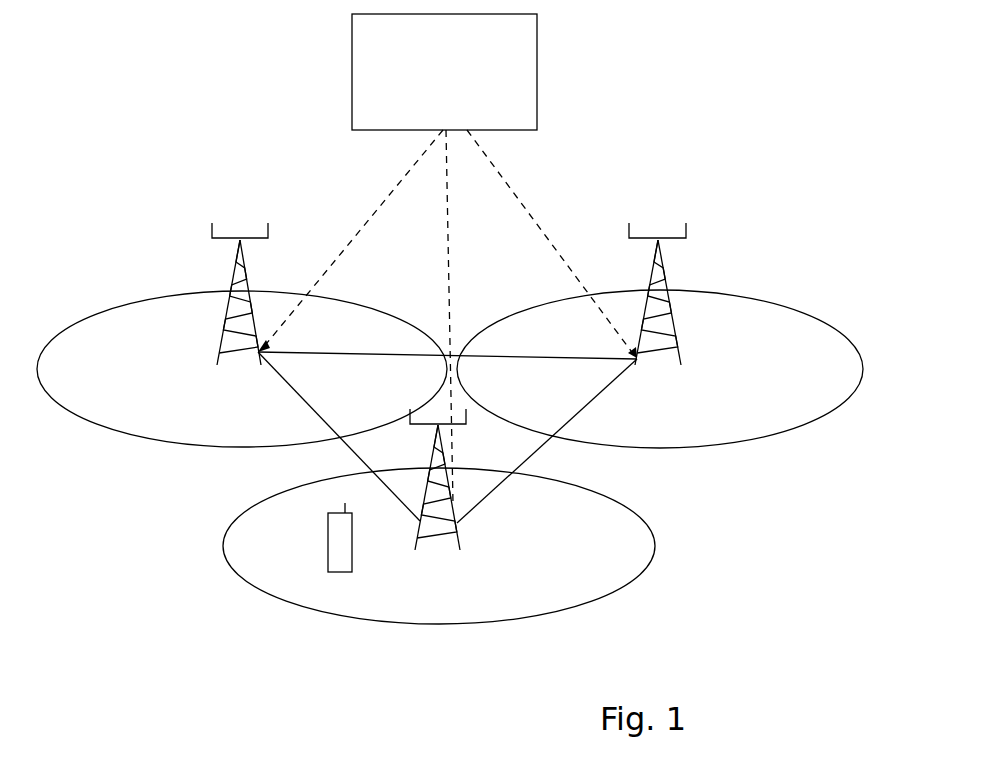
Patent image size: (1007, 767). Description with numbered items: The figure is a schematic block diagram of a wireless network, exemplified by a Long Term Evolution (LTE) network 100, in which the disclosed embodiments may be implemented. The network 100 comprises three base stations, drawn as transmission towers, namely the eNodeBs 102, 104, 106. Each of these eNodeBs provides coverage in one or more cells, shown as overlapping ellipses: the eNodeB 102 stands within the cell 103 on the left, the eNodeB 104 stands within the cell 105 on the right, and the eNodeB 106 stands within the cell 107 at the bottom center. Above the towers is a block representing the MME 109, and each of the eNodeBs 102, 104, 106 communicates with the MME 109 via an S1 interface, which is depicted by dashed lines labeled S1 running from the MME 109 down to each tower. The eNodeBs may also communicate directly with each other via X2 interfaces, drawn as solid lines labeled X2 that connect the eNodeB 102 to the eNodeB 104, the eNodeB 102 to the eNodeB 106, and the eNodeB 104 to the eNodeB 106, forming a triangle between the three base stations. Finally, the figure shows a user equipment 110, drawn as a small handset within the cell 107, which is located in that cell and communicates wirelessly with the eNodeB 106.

The LTE network 100 is at (256, 154).
The eNodeB 102 is at (236, 266).
The cell 103 is at (131, 436).
The eNodeB 104 is at (664, 272).
The cell 105 is at (758, 298).
The eNodeB 106 is at (456, 530).
The cell 107 is at (655, 540).
The MME 109 is at (506, 113).
The user equipment 110 is at (332, 538).